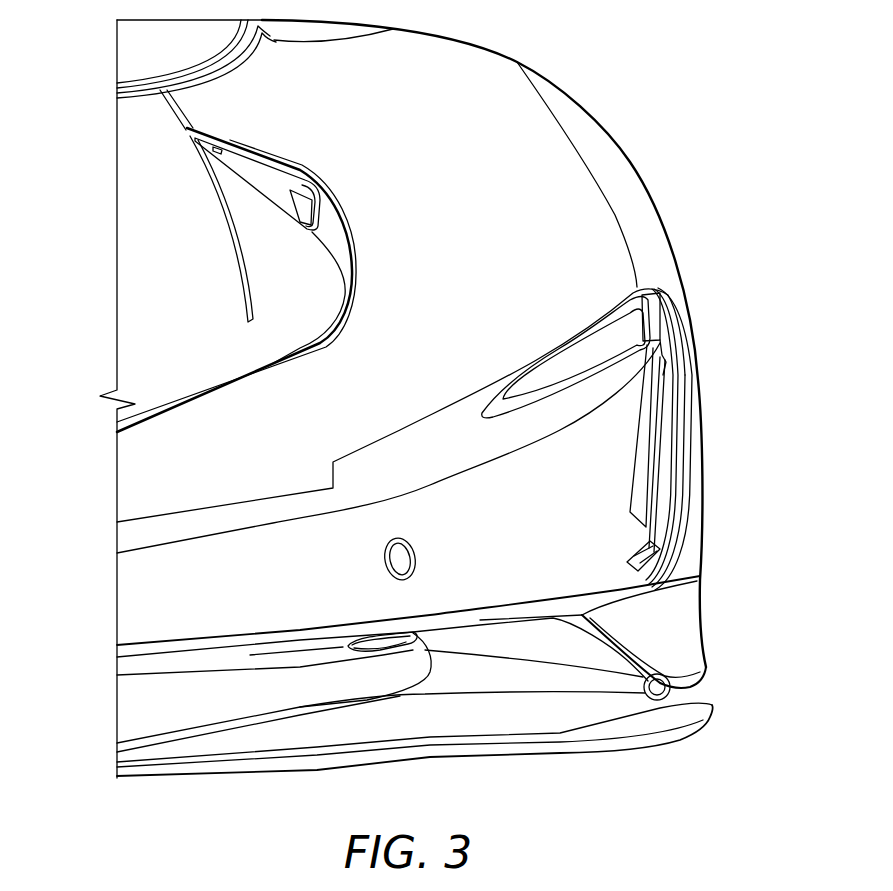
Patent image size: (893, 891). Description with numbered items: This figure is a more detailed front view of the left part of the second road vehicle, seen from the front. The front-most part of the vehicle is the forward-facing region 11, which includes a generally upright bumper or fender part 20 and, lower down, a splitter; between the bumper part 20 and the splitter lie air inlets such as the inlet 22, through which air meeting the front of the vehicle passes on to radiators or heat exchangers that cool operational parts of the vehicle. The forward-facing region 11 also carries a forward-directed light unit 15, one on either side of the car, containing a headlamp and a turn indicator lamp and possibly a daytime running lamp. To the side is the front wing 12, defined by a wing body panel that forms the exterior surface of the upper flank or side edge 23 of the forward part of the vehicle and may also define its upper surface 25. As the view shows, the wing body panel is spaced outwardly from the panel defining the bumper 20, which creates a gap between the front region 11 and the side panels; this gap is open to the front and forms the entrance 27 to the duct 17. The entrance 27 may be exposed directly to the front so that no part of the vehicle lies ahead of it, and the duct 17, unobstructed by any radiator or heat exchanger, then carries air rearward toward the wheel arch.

The forward-facing region 11 is at (161, 598).
The front wing 12 is at (624, 152).
The forward-directed light unit 15 is at (631, 325).
The duct 17 is at (663, 424).
The bumper part 20 is at (597, 497).
The air inlet 22 is at (538, 640).
The upper flank or side edge 23 is at (556, 136).
The upper surface of the forward part of the vehicle 25 is at (490, 107).
The entrance to the duct 27 is at (661, 389).